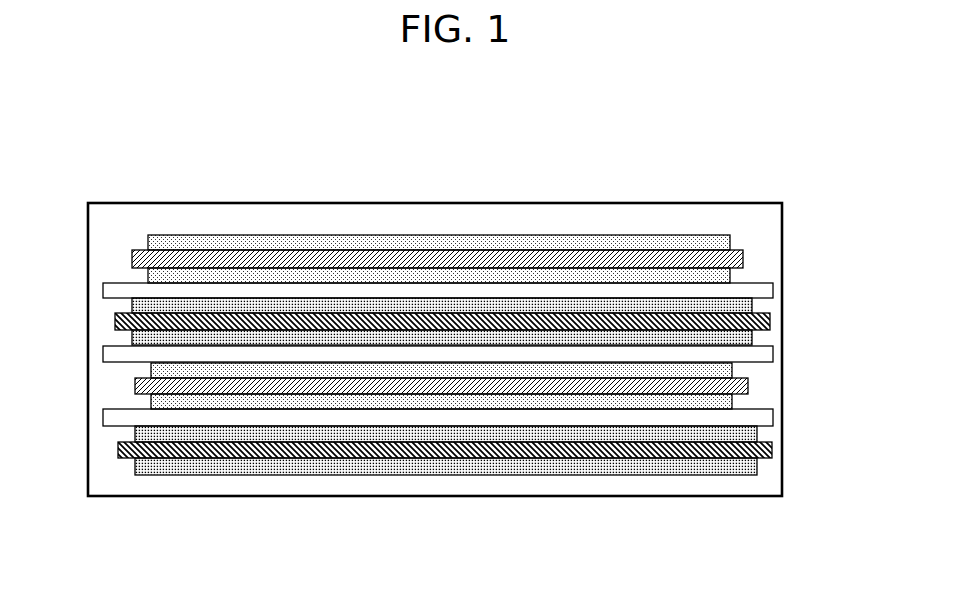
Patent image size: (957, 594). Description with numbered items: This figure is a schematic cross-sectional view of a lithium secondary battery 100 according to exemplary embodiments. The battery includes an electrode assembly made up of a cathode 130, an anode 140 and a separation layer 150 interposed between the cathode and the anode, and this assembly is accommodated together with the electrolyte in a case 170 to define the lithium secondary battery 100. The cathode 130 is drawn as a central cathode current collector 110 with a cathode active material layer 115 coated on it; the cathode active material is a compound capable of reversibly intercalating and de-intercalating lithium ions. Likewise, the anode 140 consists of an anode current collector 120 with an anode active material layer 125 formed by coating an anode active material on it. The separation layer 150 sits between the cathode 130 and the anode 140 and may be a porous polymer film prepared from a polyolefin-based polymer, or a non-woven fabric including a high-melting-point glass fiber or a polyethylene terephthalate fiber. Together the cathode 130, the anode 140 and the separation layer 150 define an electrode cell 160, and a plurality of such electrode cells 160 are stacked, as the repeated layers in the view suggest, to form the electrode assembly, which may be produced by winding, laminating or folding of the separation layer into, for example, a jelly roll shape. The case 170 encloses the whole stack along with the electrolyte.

The lithium secondary battery 100 is at (398, 142).
The cathode current collector 110 is at (744, 259).
The cathode active material layer 115 is at (731, 239).
The anode current collector 120 is at (771, 321).
The anode active material layer 125 is at (753, 306).
The cathode 130 is at (116, 282).
The anode 140 is at (108, 300).
The separation layer 150 is at (102, 292).
The electrode cell 160 is at (855, 234).
The case 170 is at (208, 497).